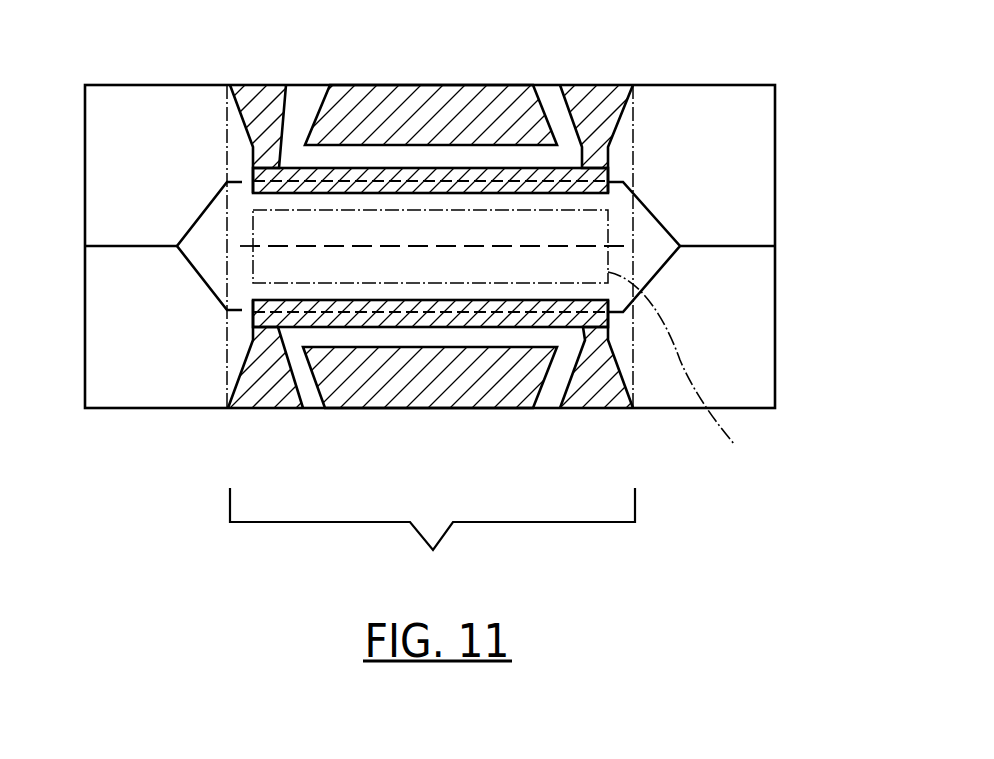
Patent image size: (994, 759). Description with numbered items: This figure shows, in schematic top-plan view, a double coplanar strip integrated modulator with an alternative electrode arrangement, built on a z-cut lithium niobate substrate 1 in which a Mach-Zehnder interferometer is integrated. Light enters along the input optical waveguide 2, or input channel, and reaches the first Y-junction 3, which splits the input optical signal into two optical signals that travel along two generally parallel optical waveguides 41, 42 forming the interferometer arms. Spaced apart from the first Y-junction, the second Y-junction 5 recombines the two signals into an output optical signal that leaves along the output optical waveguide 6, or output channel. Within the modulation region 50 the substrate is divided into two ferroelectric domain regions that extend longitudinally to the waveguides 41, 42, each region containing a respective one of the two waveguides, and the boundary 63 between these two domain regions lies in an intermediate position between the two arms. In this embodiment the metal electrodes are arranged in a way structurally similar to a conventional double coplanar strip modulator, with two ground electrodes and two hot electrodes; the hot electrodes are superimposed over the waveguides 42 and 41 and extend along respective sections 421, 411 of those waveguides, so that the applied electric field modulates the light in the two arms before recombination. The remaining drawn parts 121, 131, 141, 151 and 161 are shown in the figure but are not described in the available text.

The substrate 1 is at (711, 82).
The input optical waveguide 2 is at (128, 250).
The first Y-junction 3 is at (177, 244).
The second Y-junction 5 is at (683, 232).
The output optical waveguide 6 is at (717, 247).
The optical waveguide 41 is at (293, 165).
The section of waveguide 411 is at (383, 176).
The optical waveguide 42 is at (449, 326).
The section of waveguide 421 is at (362, 313).
The modulation region 50 is at (432, 540).
The boundary 63 is at (425, 246).
The lower inner holder portion 121 is at (495, 393).
The lower outer holder portion 131 is at (605, 395).
The upper inner holder portion 141 is at (468, 100).
The upper outer holder portion 151 is at (596, 98).
The outer edge contour (dashed) 161 is at (698, 369).